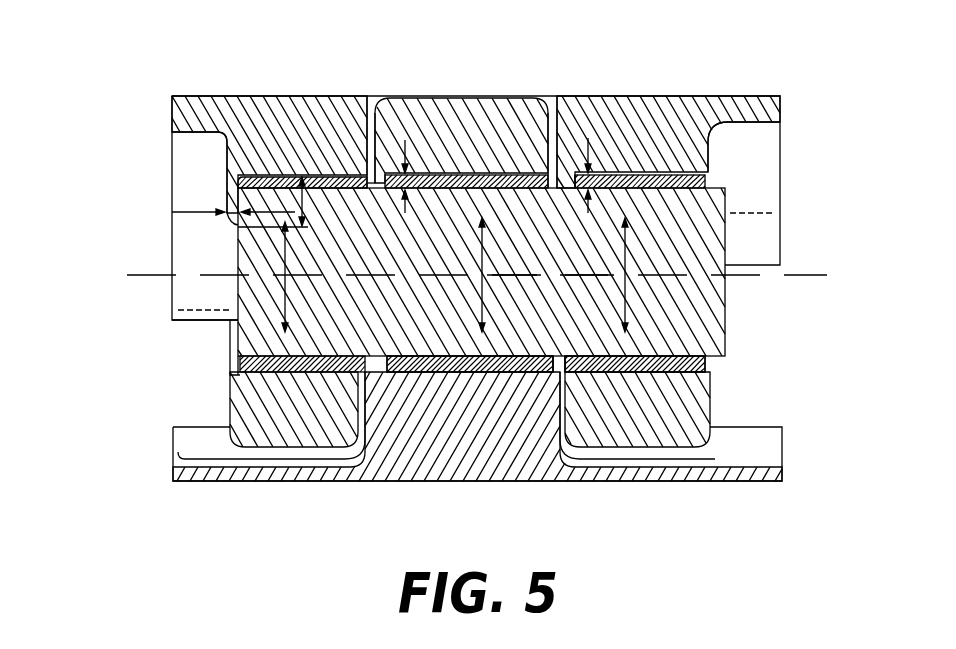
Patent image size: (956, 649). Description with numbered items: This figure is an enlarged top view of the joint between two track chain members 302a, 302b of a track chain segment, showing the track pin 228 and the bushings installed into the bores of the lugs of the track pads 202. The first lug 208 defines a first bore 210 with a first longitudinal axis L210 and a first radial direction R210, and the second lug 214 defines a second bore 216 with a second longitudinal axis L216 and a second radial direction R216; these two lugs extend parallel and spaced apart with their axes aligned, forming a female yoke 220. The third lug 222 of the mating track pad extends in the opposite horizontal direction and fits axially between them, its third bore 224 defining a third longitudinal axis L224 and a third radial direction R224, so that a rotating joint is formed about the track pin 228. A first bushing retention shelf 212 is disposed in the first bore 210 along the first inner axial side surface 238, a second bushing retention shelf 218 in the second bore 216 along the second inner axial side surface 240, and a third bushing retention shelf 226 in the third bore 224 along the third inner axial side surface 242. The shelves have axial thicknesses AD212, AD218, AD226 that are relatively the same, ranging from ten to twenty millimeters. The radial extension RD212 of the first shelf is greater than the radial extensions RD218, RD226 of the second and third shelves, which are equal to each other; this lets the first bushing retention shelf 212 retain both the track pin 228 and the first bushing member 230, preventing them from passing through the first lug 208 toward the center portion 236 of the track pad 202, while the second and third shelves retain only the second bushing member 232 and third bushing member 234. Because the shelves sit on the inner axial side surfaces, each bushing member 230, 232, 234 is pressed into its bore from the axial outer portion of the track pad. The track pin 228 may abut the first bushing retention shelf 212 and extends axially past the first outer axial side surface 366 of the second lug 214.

The track pad 202 is at (781, 68).
The first lug 208 is at (250, 408).
The first bore 210 is at (228, 327).
The first bushing retention shelf 212 is at (234, 226).
The second lug 214 is at (690, 417).
The second bore 216 is at (713, 365).
The second bushing retention shelf 218 is at (560, 174).
The female yoke 220 is at (378, 100).
The third lug 222 is at (527, 113).
The third bore 224 is at (549, 173).
The third bushing retention shelf 226 is at (378, 367).
The track pin 228 is at (341, 342).
The first bushing member 230 is at (263, 372).
The second bushing member 232 is at (593, 363).
The third bushing member 234 is at (452, 360).
The center portion 236 is at (193, 296).
The first inner axial side surface 238 is at (226, 168).
The second inner axial side surface 240 is at (566, 380).
The third inner axial side surface 242 is at (350, 176).
The first track chain member 302a is at (782, 112).
The second track chain member 302b is at (738, 482).
The first outer axial side surface 366 is at (708, 150).
The axial thickness of first bushing retention shelf AD212 is at (190, 212).
The radial extension of first bushing retention shelf RD212 is at (301, 176).
The first longitudinal axis L210 is at (305, 262).
The first radial direction R210 is at (285, 288).
The radial extension of third bushing retention shelf RD226 is at (408, 152).
The axial thickness of third bushing retention shelf AD226 is at (372, 182).
The third radial direction R224 is at (483, 267).
The third longitudinal axis L224 is at (513, 277).
The radial extension of second bushing retention shelf RD218 is at (588, 150).
The axial thickness of second bushing retention shelf AD218 is at (645, 190).
The second radial direction R216 is at (630, 242).
The second longitudinal axis L216 is at (638, 277).